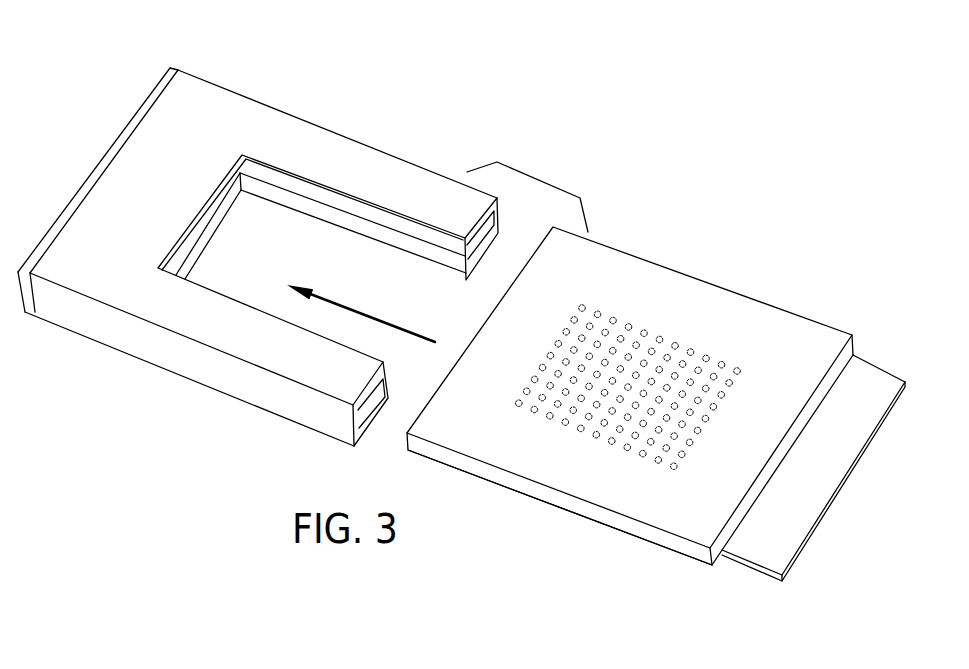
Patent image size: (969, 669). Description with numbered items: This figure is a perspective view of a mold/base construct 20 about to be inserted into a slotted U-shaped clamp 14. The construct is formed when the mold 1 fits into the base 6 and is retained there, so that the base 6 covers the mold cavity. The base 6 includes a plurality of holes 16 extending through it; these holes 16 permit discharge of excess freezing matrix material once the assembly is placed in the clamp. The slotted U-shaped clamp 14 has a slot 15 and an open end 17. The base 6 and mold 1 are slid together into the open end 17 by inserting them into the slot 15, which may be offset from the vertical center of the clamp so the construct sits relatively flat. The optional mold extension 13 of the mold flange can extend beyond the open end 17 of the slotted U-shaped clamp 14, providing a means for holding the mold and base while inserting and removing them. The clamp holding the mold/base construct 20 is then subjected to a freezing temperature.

The mold 1 is at (673, 413).
The base 6 is at (662, 263).
The mold extension 13 is at (877, 407).
The slotted U-shaped clamp 14 is at (319, 235).
The slot 15 is at (475, 237).
The holes 16 is at (693, 353).
The open end 17 is at (398, 347).
The mold/base construct 20 is at (660, 548).